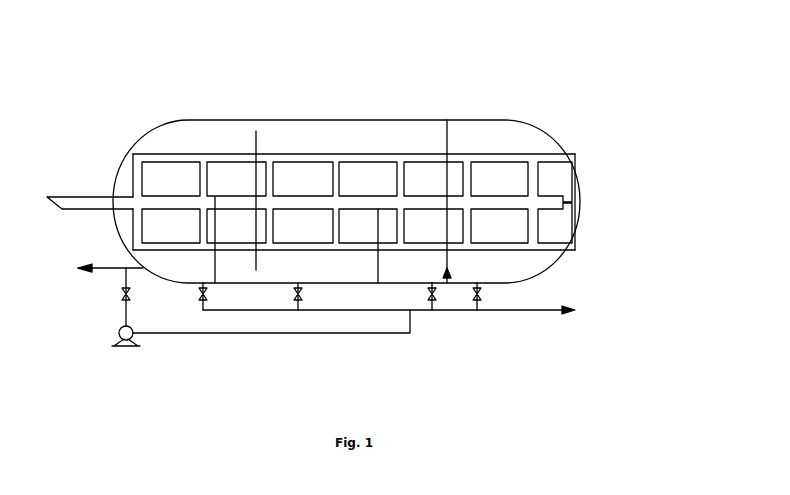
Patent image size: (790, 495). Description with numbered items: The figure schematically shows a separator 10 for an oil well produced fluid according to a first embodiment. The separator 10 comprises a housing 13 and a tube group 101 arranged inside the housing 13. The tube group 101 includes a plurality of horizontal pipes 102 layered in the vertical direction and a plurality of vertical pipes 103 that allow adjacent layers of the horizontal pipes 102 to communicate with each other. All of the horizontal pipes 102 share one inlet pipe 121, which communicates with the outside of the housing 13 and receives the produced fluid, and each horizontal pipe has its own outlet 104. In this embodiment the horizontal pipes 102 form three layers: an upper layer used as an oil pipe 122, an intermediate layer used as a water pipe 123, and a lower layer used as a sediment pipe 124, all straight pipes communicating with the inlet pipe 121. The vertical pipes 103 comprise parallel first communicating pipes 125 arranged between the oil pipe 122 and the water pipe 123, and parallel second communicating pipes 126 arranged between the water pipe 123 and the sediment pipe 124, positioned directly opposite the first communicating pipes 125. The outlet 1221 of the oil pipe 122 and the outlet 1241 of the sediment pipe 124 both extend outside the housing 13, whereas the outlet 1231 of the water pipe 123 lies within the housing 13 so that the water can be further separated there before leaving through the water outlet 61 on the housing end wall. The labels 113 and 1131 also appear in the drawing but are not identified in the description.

The separator 10 is at (369, 52).
The housing 13 is at (316, 116).
The tube group 101 is at (387, 149).
The horizontal pipes 102 is at (565, 88).
The vertical pipes 103 is at (157, 53).
The outlet 104 is at (668, 150).
The partition plate 113 is at (353, 183).
The inlet pipe 121 is at (85, 211).
The oil pipe 122 is at (498, 203).
The water pipe 123 is at (516, 177).
The sediment pipe 124 is at (479, 242).
The first communicating pipes 125 is at (200, 182).
The second communicating pipes 126 is at (200, 220).
The central channel 1131 is at (296, 239).
The outlet of the oil pipe 1221 is at (575, 157).
The outlet of the water pipe 1231 is at (575, 201).
The outlet of the sediment pipe 1241 is at (575, 250).
The water outlet 61 is at (78, 270).